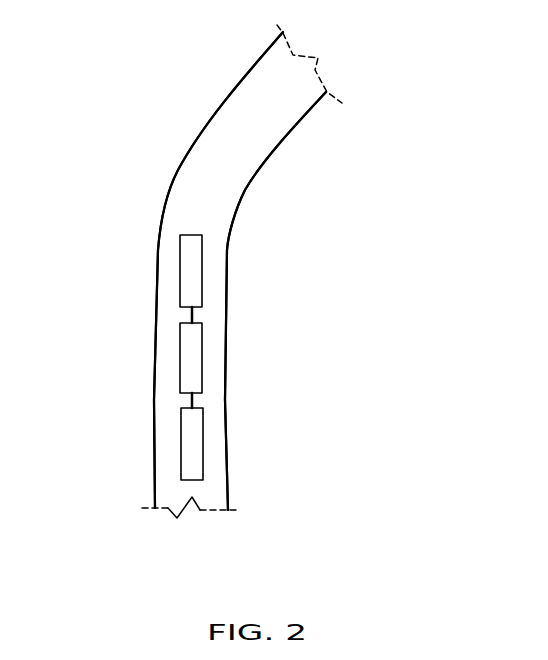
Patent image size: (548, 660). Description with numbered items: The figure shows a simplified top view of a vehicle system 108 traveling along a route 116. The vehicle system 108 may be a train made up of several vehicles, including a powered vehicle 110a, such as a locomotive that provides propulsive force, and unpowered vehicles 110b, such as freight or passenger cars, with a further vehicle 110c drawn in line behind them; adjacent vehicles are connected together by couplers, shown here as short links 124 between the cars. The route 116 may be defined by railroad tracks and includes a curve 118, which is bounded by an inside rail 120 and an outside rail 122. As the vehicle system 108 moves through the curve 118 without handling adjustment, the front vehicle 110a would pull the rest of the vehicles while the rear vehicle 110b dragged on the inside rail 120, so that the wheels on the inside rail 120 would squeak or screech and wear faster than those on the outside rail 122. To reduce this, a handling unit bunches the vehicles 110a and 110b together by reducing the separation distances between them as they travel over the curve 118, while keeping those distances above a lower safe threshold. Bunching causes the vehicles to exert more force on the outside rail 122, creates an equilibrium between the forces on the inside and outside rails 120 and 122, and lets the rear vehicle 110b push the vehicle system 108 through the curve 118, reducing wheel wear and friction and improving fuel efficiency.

The vehicle system 108 is at (122, 493).
The powered vehicle 110a is at (202, 270).
The unpowered vehicle 110b is at (203, 357).
The third sensor element 110c is at (204, 442).
The route 116 is at (157, 231).
The curve 118 is at (291, 156).
The inside rail 120 is at (236, 207).
The outside rail 122 is at (176, 165).
The RFI readers 124 is at (165, 318).